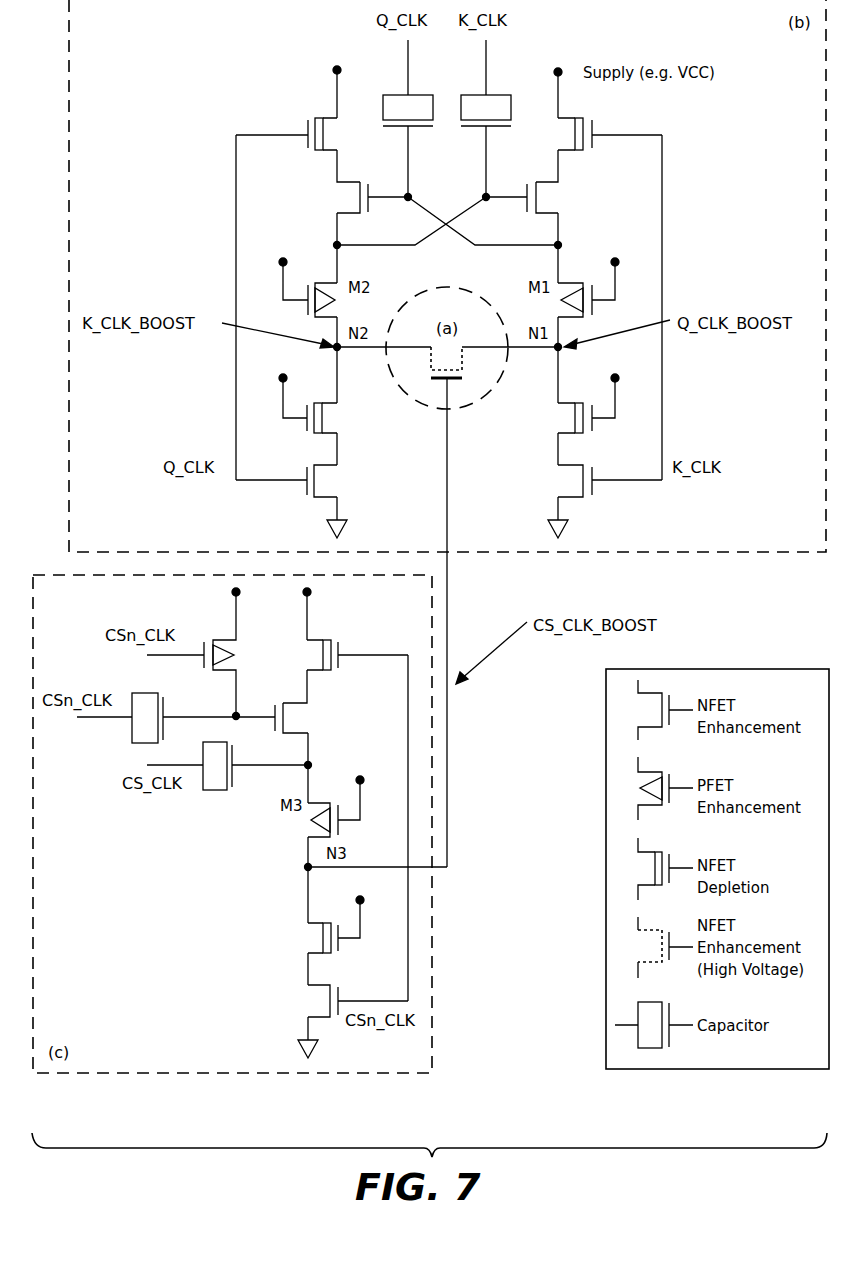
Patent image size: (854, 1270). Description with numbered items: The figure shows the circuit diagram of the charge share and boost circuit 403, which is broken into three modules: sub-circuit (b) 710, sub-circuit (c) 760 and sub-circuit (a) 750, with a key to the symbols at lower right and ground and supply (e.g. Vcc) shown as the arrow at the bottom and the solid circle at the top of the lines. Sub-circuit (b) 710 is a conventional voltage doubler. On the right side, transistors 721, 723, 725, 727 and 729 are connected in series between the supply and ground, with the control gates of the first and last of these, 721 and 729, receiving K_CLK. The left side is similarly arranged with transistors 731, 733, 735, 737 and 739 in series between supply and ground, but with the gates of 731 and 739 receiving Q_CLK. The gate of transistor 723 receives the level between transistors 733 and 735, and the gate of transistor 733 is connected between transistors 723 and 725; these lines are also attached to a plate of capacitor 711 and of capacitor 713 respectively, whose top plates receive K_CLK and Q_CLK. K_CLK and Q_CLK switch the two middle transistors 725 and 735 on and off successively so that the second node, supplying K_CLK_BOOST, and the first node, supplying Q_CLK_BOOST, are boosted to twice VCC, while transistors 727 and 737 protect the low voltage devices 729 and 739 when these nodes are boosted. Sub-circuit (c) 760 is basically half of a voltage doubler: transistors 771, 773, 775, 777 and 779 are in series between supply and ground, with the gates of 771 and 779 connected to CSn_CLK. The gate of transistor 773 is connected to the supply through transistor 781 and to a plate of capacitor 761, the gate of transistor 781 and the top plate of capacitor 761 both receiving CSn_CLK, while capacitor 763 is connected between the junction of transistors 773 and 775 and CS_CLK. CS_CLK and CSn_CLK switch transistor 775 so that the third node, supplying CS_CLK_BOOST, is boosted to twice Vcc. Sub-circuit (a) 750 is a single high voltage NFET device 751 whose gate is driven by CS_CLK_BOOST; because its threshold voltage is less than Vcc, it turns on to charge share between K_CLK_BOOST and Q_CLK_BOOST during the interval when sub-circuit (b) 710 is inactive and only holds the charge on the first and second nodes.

The charge share and boost circuit 403 is at (125, 1090).
The sub-circuit (b) 710 is at (735, 555).
The capacitor 711 is at (491, 94).
The capacitor 713 is at (413, 94).
The transistor 721 is at (573, 118).
The transistor 723 is at (548, 212).
The transistor M1 725 is at (568, 282).
The transistor 727 is at (568, 400).
The transistor 729 is at (565, 462).
The transistor 731 is at (322, 118).
The transistor 733 is at (347, 212).
The transistor M2 735 is at (330, 282).
The transistor 737 is at (328, 400).
The transistor 739 is at (322, 462).
The sub-circuit (a) 750 is at (450, 410).
The high voltage NFET device 751 is at (462, 355).
The sub-circuit (c) 760 is at (433, 955).
The capacitor 761 is at (140, 693).
The capacitor 763 is at (212, 790).
The transistor 771 is at (318, 640).
The transistor 773 is at (298, 733).
The transistor M3 775 is at (316, 803).
The transistor 777 is at (312, 925).
The transistor 779 is at (312, 987).
The transistor 781 is at (226, 640).